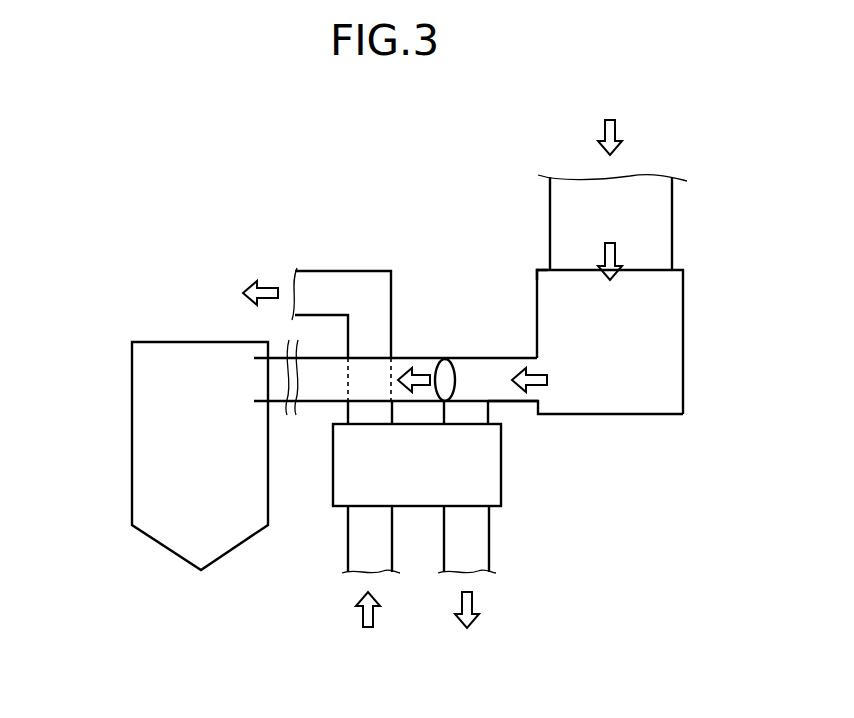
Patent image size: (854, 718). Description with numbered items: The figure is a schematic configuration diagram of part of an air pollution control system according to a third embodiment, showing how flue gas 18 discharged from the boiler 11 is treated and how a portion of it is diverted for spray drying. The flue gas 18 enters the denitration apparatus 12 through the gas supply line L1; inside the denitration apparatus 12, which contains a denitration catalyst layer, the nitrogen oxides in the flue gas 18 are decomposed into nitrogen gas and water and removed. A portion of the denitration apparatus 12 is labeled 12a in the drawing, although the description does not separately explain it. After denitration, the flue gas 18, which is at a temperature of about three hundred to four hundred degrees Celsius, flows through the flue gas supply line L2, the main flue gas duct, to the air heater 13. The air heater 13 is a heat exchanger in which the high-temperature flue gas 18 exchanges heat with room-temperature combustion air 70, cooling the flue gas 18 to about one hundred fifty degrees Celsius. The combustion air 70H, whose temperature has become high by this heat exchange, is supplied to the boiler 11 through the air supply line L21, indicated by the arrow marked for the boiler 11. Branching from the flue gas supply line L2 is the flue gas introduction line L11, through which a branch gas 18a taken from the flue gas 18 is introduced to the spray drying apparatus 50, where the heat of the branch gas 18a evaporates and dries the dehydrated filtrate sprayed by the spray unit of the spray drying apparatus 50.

The spray drying apparatus 50 is at (107, 384).
The flue gas introduction line L11 is at (310, 405).
The air supply line L21 is at (360, 271).
The combustion air 70H is at (270, 287).
The boiler 11 is at (186, 295).
The branch gas 18a is at (420, 377).
The flue gas supply line L2 is at (512, 357).
The air heater 13 is at (501, 493).
The combustion air 70 is at (360, 615).
The denitration apparatus 12 is at (651, 424).
The tank inlet portion 12a is at (535, 278).
The gas supply line L1 is at (672, 211).
The flue gas 18 is at (622, 128).